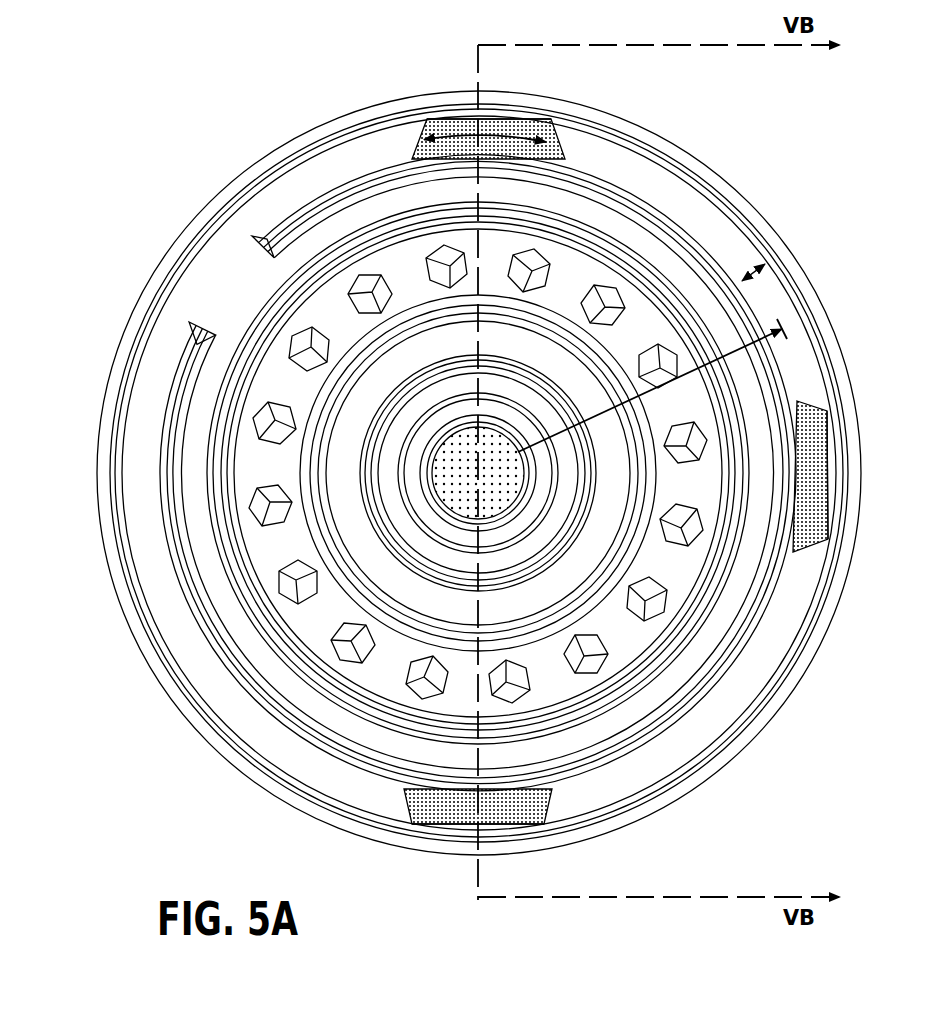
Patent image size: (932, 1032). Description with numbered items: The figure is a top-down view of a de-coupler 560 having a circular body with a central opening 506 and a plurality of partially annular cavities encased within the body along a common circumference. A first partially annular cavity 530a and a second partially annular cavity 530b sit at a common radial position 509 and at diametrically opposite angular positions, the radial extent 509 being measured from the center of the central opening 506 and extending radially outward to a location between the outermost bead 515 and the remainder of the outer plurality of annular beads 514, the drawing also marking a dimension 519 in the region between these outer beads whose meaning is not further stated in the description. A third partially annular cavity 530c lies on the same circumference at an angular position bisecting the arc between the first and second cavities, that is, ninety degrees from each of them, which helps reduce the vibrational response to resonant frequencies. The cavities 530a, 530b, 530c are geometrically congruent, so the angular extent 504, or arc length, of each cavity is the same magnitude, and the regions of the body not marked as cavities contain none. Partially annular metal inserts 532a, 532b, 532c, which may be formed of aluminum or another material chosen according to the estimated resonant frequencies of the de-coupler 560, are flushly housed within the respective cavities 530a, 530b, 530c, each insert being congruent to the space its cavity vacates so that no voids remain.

The de-coupler 560 is at (262, 116).
The outermost bead 515 is at (732, 207).
The outer plurality of annular beads 514 is at (665, 203).
The central opening 506 is at (478, 473).
The radial position 509 is at (782, 328).
The gap 519 is at (764, 261).
The angular extent 504 is at (531, 124).
The first partially annular cavity 530a is at (424, 818).
The second partially annular cavity 530b is at (426, 122).
The third partially annular cavity 530c is at (824, 541).
The partially annular metal insert 532a is at (530, 814).
The partially annular metal insert 532b is at (460, 120).
The partially annular metal insert 532c is at (822, 517).